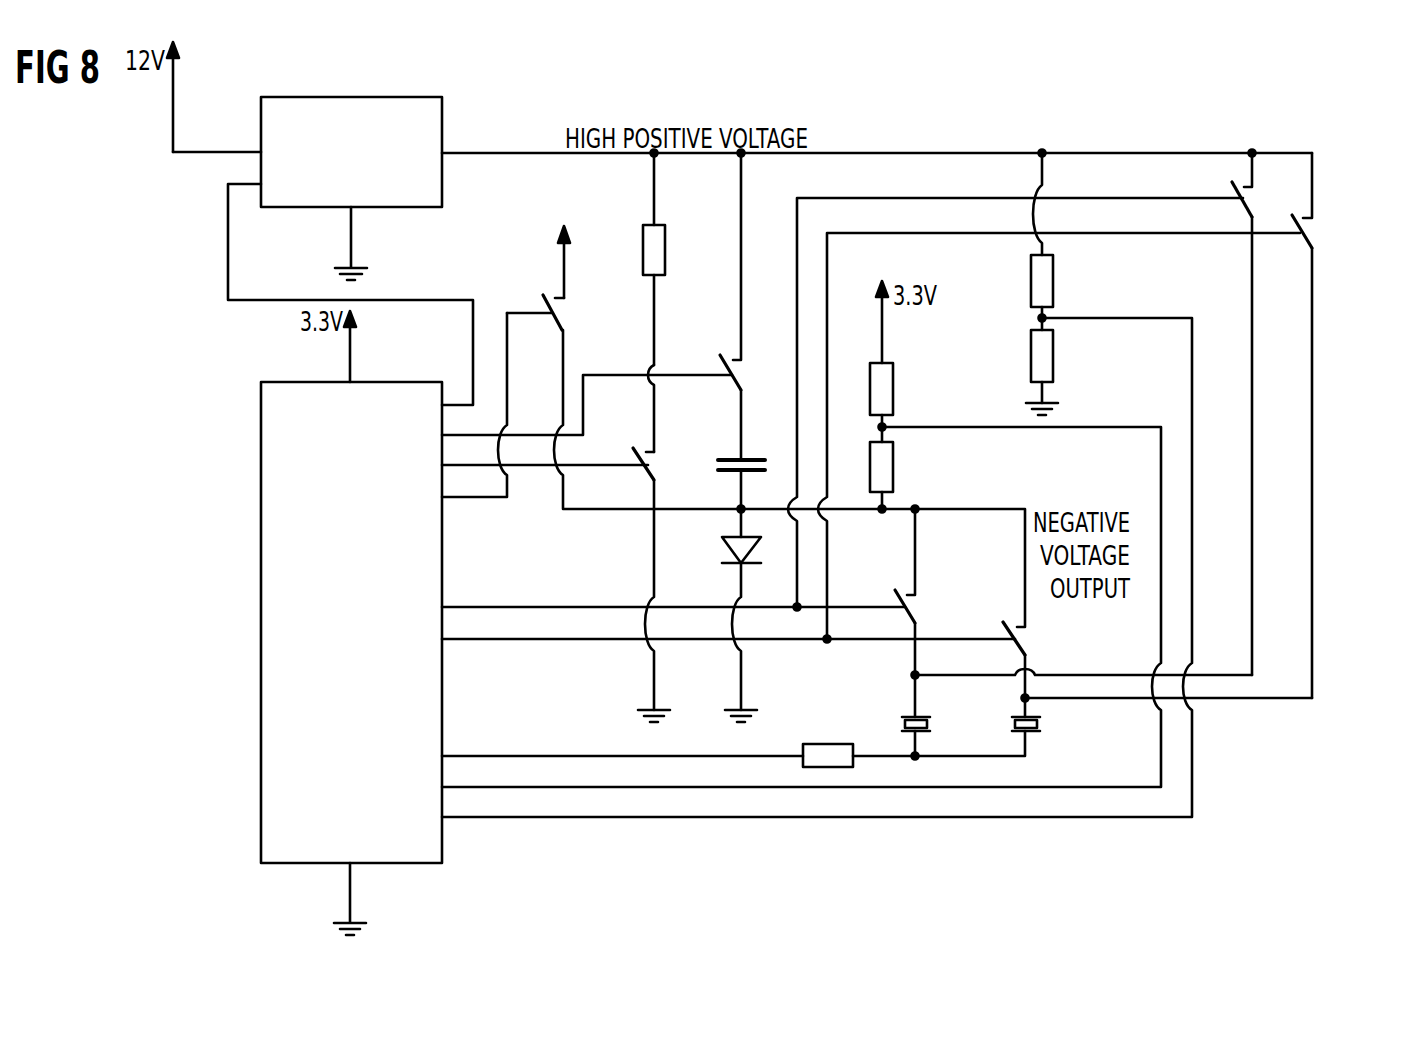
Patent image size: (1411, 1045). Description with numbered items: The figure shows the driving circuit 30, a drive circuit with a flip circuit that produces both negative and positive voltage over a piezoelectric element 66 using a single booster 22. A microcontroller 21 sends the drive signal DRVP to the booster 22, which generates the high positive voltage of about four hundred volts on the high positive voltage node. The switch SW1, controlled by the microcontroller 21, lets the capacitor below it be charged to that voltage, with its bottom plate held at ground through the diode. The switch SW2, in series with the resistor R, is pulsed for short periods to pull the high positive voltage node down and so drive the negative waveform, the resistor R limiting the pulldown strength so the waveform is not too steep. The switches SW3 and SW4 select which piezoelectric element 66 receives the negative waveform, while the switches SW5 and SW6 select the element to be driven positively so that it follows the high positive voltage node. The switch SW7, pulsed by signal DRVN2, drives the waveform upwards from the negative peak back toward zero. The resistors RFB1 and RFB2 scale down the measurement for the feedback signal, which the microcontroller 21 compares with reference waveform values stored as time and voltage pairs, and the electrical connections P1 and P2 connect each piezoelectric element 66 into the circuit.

The microcontroller 21 is at (260, 641).
The booster 22 is at (443, 118).
The driving circuit 30 is at (1310, 465).
The piezo element 66 is at (900, 722).
The resistor R is at (667, 250).
The resistor RFB1 is at (895, 388).
The resistor RFB2 is at (895, 458).
The controlled switch SW1 is at (747, 382).
The controlled switch SW2 is at (656, 456).
The controlled switch SW3 is at (920, 617).
The controlled switch SW4 is at (1030, 652).
The controlled switch SW5 is at (1250, 200).
The controlled switch SW6 is at (1315, 246).
The controlled switch SW7 is at (558, 320).
The electrical connection P1 is at (912, 675).
The electrical connection P2 is at (917, 760).